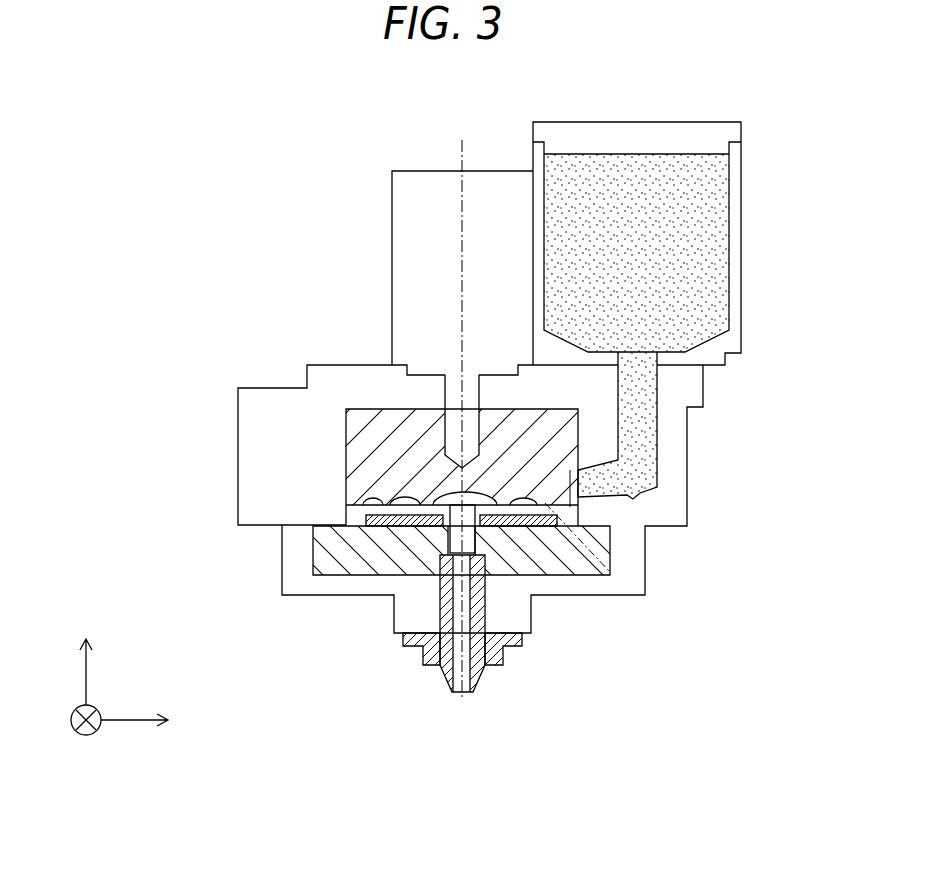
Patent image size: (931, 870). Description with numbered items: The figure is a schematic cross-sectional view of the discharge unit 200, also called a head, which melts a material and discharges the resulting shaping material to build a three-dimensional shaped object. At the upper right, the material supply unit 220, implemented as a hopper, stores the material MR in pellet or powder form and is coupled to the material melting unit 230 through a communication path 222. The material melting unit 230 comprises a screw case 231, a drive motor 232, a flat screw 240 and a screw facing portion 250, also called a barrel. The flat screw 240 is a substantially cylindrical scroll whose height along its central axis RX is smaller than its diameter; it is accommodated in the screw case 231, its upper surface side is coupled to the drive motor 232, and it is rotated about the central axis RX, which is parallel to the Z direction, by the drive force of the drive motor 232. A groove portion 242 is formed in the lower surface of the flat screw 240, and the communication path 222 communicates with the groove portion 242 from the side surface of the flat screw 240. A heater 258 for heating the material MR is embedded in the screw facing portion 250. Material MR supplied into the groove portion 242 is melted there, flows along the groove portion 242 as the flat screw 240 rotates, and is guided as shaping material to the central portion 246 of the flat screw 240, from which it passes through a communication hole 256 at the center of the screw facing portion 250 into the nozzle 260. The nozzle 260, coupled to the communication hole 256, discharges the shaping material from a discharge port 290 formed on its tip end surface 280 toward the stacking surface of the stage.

The discharge unit 200 is at (137, 163).
The material supply unit 220 is at (742, 236).
The material MR is at (712, 203).
The communication path 222 is at (640, 423).
The material melting unit 230 is at (290, 235).
The screw case 231 is at (357, 365).
The drive motor 232 is at (392, 205).
The central axis RX is at (460, 160).
The flat screw 240 is at (370, 438).
The groove portion 242 is at (405, 492).
The central portion 246 is at (443, 483).
The screw facing portion 250 is at (323, 555).
The communication hole 256 is at (612, 573).
The heater 258 is at (560, 522).
The nozzle 260 is at (432, 678).
The tip end surface 280 is at (472, 690).
The discharge port 290 is at (458, 696).